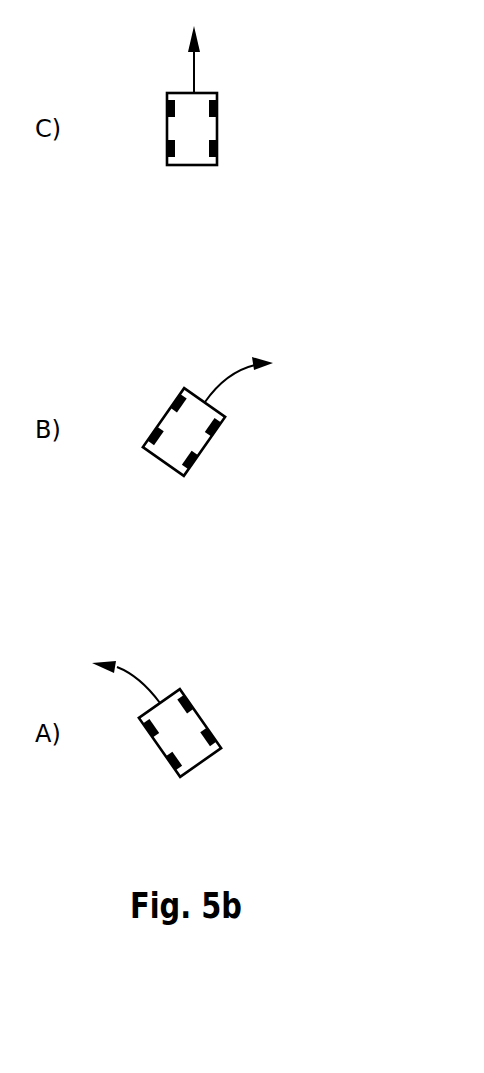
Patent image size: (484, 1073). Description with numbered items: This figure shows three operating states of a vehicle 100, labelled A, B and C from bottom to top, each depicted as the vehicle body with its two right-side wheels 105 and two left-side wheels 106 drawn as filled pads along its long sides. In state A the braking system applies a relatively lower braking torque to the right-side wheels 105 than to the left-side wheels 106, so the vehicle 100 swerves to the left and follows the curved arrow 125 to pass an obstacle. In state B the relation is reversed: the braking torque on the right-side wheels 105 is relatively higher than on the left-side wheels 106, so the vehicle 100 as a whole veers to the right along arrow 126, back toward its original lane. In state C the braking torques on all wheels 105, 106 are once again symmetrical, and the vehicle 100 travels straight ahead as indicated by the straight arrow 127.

The vehicle 100 is at (177, 92).
The wheels on the right side of the vehicle 105 is at (217, 108).
The wheels on the left side of the vehicle 106 is at (167, 108).
The arrow 125 is at (125, 668).
The arrow 126 is at (240, 362).
The trajectory arrow (straight ahead) 127 is at (194, 60).